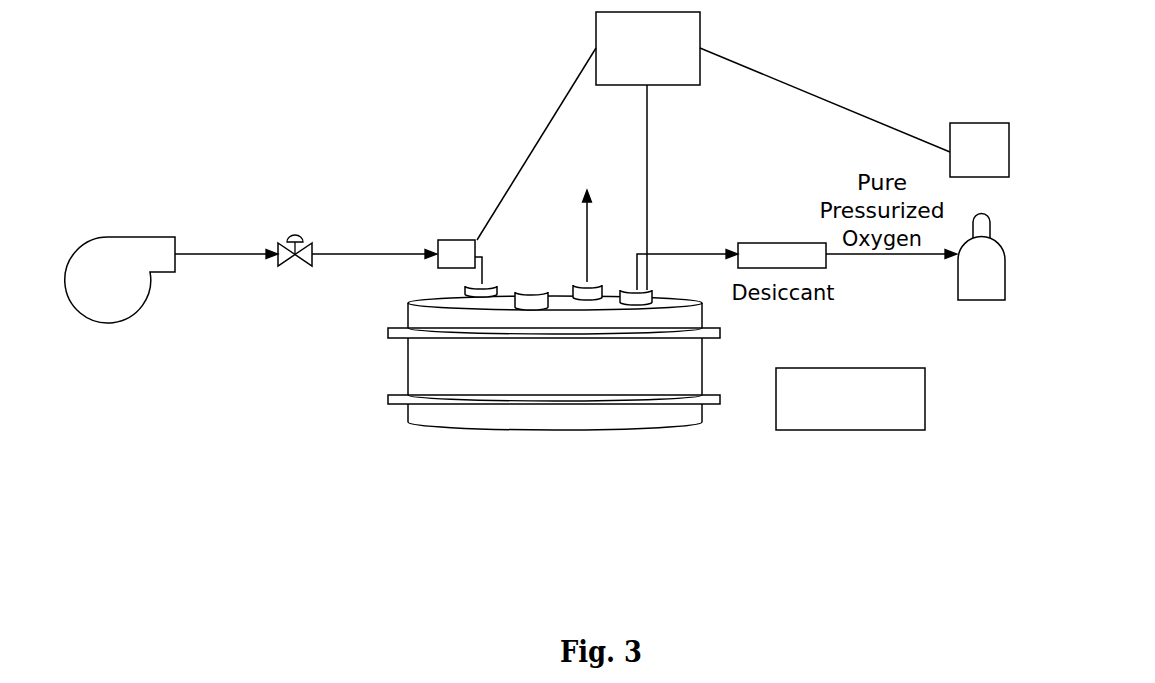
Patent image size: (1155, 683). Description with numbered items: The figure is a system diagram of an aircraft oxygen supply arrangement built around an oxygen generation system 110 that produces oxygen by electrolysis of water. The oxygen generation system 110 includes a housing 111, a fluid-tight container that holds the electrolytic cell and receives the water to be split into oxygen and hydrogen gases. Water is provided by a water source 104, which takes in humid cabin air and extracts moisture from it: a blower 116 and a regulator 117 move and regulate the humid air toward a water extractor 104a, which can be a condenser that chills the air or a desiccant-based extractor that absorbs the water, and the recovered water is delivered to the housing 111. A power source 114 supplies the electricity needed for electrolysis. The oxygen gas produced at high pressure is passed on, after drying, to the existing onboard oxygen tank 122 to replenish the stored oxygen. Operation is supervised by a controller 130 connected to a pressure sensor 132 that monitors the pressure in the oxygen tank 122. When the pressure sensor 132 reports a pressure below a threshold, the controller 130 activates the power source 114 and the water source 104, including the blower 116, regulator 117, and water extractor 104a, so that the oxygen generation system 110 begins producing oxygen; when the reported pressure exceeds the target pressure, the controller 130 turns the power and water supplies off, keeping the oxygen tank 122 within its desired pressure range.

The water source 104 is at (310, 147).
The water extractor 104a is at (456, 240).
The oxygen generation system 110 is at (342, 430).
The housing 111 is at (499, 440).
The power source 114 is at (854, 439).
The blower 116 is at (148, 236).
The regulator 117 is at (312, 243).
The oxygen tank 122 is at (1005, 283).
The controller 130 is at (713, 151).
The pressure sensor 132 is at (979, 150).